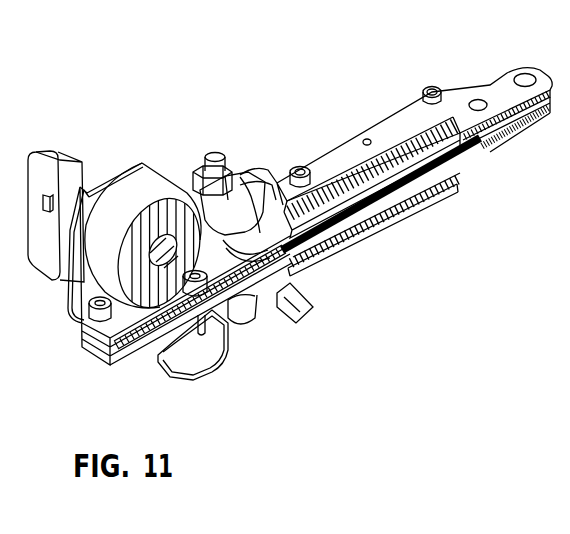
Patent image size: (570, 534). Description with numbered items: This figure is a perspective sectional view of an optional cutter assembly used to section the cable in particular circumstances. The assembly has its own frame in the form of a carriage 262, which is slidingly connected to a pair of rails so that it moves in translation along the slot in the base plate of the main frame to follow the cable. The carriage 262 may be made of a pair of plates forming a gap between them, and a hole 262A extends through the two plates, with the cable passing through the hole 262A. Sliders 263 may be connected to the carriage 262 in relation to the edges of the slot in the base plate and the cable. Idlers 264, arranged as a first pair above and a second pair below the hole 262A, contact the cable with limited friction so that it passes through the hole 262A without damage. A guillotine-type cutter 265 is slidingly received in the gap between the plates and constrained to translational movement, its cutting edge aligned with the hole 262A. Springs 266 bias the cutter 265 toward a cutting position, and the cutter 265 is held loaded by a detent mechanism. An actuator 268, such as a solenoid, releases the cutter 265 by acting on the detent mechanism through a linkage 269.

The carriage 262 is at (455, 88).
The hole 262A is at (277, 183).
The sliders 263 is at (309, 322).
The idlers 264 is at (227, 210).
The cutter 265 is at (380, 233).
The springs 266 is at (427, 210).
The actuator 268 is at (137, 200).
The linkage 269 is at (67, 153).